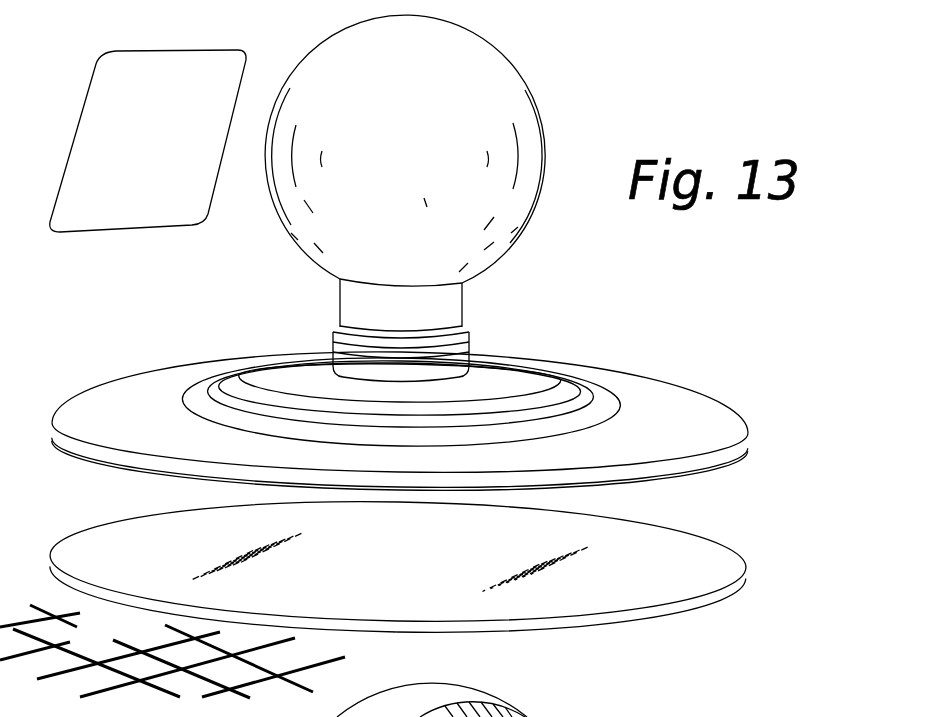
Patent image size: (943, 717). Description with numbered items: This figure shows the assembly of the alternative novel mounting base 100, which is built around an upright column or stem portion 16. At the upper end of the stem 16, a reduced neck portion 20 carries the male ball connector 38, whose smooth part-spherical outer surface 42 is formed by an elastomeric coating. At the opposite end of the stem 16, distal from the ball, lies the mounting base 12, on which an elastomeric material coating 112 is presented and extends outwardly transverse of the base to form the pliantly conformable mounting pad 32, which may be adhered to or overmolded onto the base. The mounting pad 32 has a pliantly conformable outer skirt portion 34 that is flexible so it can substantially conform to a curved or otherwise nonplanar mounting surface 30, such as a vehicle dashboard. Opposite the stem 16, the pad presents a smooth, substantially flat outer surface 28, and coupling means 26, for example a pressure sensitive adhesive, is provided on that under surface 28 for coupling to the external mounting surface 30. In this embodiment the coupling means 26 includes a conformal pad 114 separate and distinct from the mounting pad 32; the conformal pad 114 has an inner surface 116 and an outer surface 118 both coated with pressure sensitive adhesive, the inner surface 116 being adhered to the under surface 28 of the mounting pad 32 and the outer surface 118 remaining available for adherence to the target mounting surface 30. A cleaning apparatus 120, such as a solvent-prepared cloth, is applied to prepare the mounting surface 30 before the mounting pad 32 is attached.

The alternative novel mounting base 100 is at (551, 76).
The mounting base 12 is at (400, 412).
The upright column or stem portion 16 is at (392, 330).
The reduced neck portion 20 is at (457, 296).
The coupling means 26 is at (398, 561).
The outer surface 28 is at (399, 468).
The mounting surface 30 is at (108, 650).
The pliantly conformable mounting pad 32 is at (400, 394).
The pliantly conformable outer skirt portion 34 is at (401, 402).
The male ball connector 38 is at (383, 171).
The smooth part-spherical outer surface 42 is at (538, 120).
The elastomeric material coating 112 is at (399, 465).
The conformal pad 114 is at (571, 605).
The inner surface 116 is at (392, 562).
The outer surface 118 is at (223, 599).
The cleaning apparatus 120 is at (158, 188).